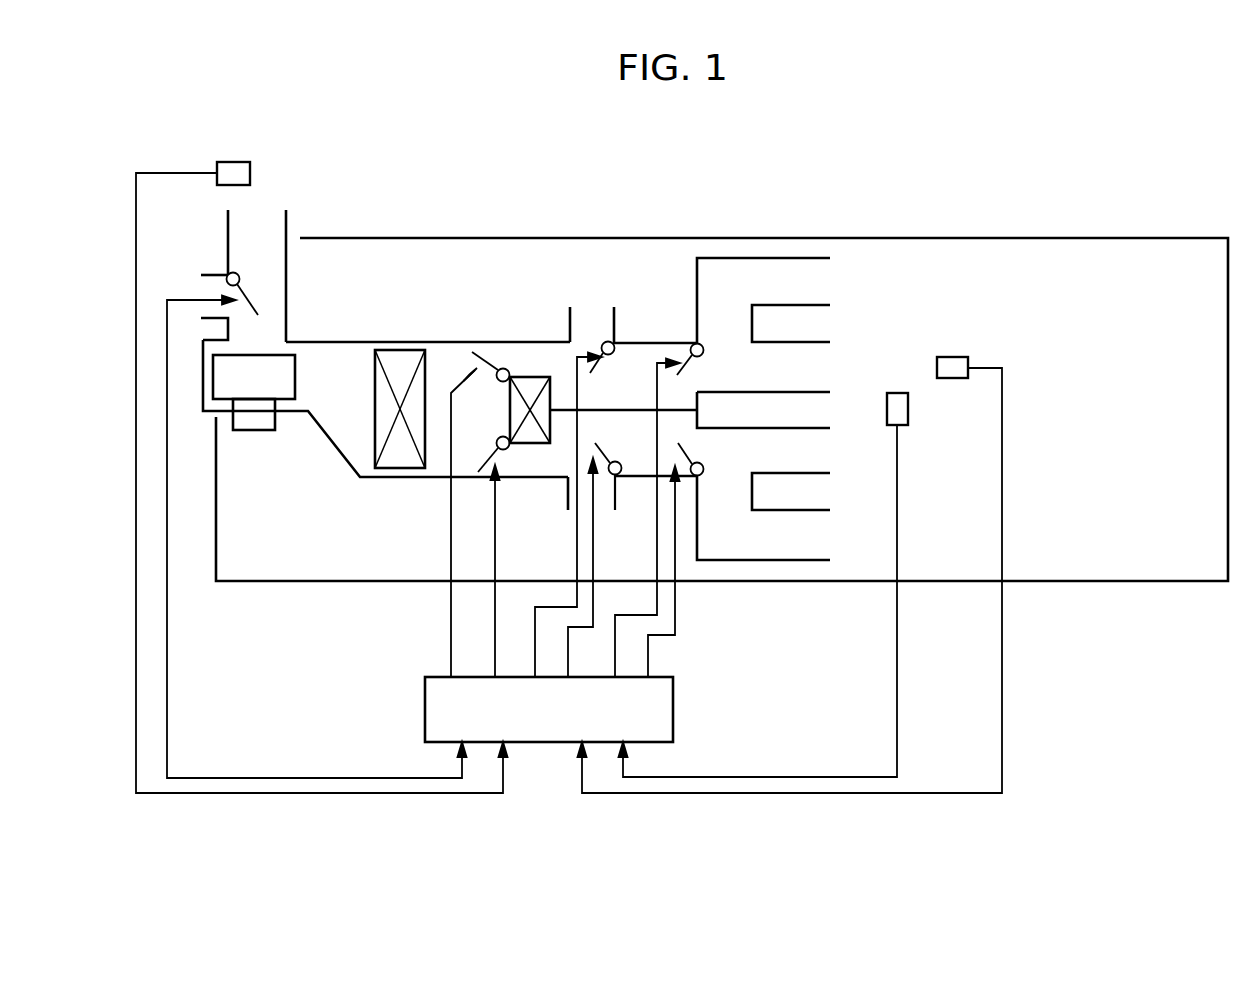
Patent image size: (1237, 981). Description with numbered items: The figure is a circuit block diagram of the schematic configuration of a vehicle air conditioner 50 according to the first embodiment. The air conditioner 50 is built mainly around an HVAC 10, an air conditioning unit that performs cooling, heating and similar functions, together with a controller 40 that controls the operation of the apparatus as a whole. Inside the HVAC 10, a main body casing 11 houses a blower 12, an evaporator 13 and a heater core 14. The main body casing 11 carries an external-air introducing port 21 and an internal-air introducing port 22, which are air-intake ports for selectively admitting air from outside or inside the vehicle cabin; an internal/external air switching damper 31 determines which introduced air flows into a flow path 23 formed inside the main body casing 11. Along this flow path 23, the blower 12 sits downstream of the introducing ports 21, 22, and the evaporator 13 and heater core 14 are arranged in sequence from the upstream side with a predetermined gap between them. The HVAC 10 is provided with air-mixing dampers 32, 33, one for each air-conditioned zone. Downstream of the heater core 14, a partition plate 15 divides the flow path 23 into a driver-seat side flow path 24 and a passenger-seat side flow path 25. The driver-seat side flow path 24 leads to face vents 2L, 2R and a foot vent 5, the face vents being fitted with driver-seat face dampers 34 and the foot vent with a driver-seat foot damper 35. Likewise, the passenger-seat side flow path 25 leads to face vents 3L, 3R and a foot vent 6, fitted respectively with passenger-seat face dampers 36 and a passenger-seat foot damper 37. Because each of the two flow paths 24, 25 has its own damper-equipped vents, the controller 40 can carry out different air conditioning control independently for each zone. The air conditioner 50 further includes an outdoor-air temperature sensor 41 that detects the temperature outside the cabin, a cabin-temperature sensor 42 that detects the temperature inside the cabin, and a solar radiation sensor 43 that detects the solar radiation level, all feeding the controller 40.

The vehicle air conditioner 50 is at (339, 122).
The HVAC 10 is at (638, 237).
The outdoor-air temperature sensor 41 is at (236, 160).
The external-air introducing port 21 is at (264, 210).
The internal-air introducing port 22 is at (207, 273).
The internal/external air switching damper 31 is at (258, 290).
The flow path 23 is at (327, 364).
The evaporator 13 is at (399, 362).
The air-mixing damper 32 is at (482, 360).
The heater core 14 is at (517, 373).
The driver-seat side flow path 24 is at (555, 350).
The foot vent 5 is at (592, 312).
The partition plate 15 is at (643, 407).
The driver-seat foot damper 35 is at (593, 372).
The driver-seat face dampers 34 is at (680, 372).
The passenger-seat foot damper 37 is at (604, 450).
The passenger-seat face dampers 36 is at (681, 443).
The foot vent 6 is at (602, 508).
The face vent 2R is at (820, 276).
The face vent 2L is at (820, 362).
The face vent 3R is at (820, 451).
The face vent 3L is at (820, 538).
The cabin-temperature sensor 42 is at (955, 356).
The solar radiation sensor 43 is at (908, 410).
The blower 12 is at (253, 417).
The main body casing 11 is at (340, 453).
The air-mixing damper 33 is at (478, 472).
The passenger-seat side flow path 25 is at (558, 458).
The controller 40 is at (675, 705).